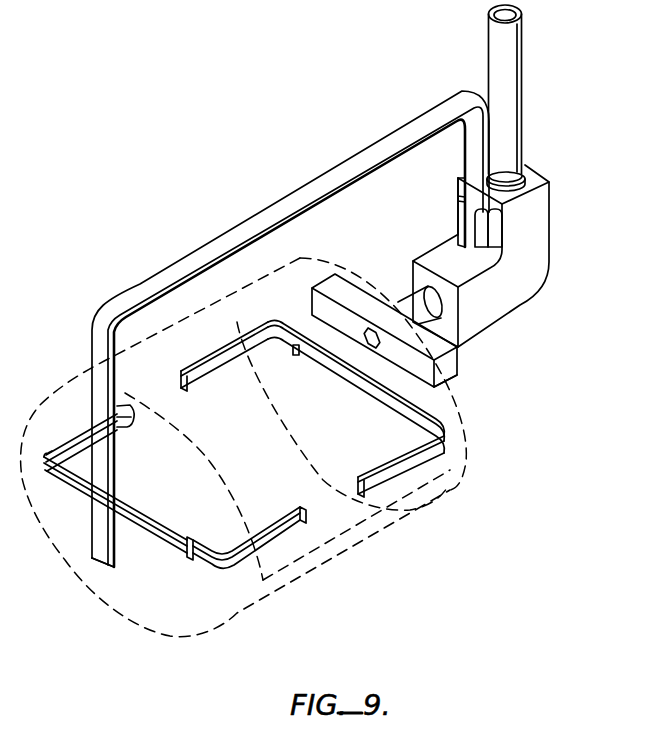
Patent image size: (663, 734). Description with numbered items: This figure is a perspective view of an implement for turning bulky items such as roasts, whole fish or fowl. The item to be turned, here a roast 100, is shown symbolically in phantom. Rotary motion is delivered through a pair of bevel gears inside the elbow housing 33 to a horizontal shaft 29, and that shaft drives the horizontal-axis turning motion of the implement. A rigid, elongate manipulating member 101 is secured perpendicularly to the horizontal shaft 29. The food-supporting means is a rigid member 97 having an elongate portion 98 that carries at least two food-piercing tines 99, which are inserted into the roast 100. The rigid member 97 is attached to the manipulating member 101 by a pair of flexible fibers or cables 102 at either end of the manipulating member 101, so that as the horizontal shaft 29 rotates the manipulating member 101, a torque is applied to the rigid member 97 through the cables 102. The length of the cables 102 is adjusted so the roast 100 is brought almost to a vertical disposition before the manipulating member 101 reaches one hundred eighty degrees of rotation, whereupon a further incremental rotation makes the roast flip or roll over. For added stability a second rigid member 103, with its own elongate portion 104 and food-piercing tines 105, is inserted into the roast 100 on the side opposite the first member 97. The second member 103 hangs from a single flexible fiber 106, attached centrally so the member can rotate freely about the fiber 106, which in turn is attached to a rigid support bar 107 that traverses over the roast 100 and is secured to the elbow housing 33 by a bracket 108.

The horizontal shaft 29 is at (417, 294).
The elbow housing 33 is at (551, 222).
The rigid member 97 is at (283, 352).
The elongate portion 98 is at (359, 387).
The food-piercing tines 99 is at (210, 376).
The roast 100 is at (357, 546).
The manipulating member 101 is at (457, 345).
The flexible fibers or cables 102 is at (317, 330).
The second rigid member 103 is at (201, 540).
The elongate portion 104 is at (153, 513).
The food-piercing tines 105 is at (86, 428).
The flexible fiber 106 is at (120, 522).
The rigid support bar 107 is at (198, 247).
The bracket 108 is at (455, 215).